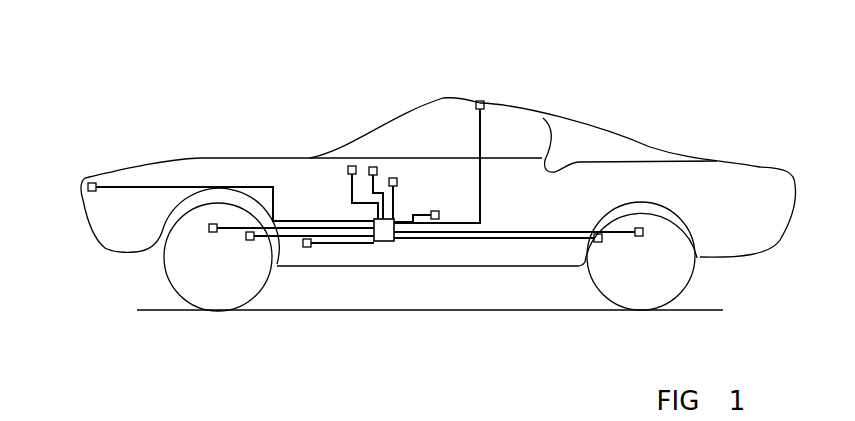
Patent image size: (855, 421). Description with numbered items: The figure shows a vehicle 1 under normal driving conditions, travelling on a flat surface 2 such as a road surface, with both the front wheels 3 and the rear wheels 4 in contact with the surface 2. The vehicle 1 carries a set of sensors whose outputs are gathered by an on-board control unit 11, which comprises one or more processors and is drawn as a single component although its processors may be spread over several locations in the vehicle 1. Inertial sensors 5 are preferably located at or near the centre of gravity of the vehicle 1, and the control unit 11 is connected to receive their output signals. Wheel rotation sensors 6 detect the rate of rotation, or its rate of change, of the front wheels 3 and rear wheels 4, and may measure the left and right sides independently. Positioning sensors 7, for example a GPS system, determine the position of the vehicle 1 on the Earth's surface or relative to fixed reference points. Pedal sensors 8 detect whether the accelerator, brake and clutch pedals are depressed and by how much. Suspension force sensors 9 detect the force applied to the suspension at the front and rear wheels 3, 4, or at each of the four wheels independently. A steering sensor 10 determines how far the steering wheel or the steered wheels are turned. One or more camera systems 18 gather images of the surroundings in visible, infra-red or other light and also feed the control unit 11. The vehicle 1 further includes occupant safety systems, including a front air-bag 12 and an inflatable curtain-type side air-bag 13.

The vehicle 1 is at (670, 93).
The flat surface 2 is at (700, 310).
The front wheels 3 is at (218, 297).
The rear wheels 4 is at (632, 295).
The inertial sensors 5 is at (436, 219).
The wheel rotation sensors 6 is at (251, 240).
The positioning sensors 7 is at (393, 178).
The pedal sensors 8 is at (308, 247).
The suspension force sensors 9 is at (210, 232).
The steering sensor 10 is at (348, 170).
The control unit 11 is at (390, 241).
The front air-bag 12 is at (373, 167).
The inflatable curtain-type side air-bag 13 is at (480, 101).
The camera systems 18 is at (92, 183).